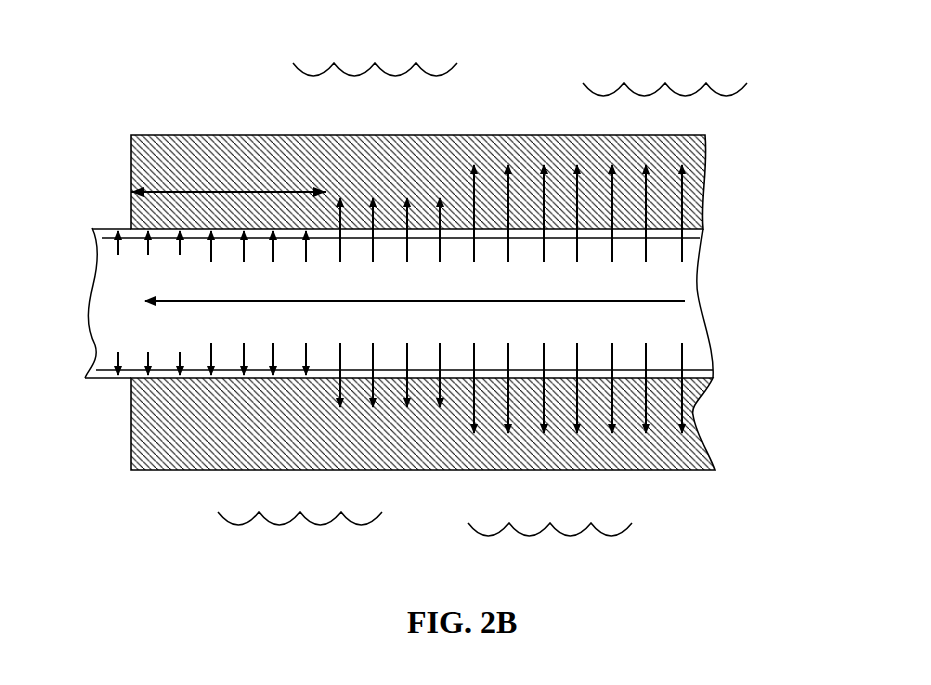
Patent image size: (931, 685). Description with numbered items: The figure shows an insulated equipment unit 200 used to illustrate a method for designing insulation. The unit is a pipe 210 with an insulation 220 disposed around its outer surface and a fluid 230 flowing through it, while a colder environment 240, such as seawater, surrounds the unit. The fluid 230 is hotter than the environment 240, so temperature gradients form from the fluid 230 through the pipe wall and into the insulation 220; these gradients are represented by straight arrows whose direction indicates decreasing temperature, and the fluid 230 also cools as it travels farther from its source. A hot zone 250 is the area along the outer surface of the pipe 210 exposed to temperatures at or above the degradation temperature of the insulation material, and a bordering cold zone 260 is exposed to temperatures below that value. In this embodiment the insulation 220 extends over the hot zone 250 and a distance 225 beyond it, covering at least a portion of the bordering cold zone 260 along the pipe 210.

The insulated equipment unit 200 is at (156, 70).
The pipe 210 is at (693, 373).
The insulation 220 is at (682, 450).
The distance 225 is at (228, 179).
The fluid 230 is at (157, 337).
The environment 240 is at (482, 295).
The hot zone 250 is at (697, 163).
The cold zone 260 is at (318, 163).